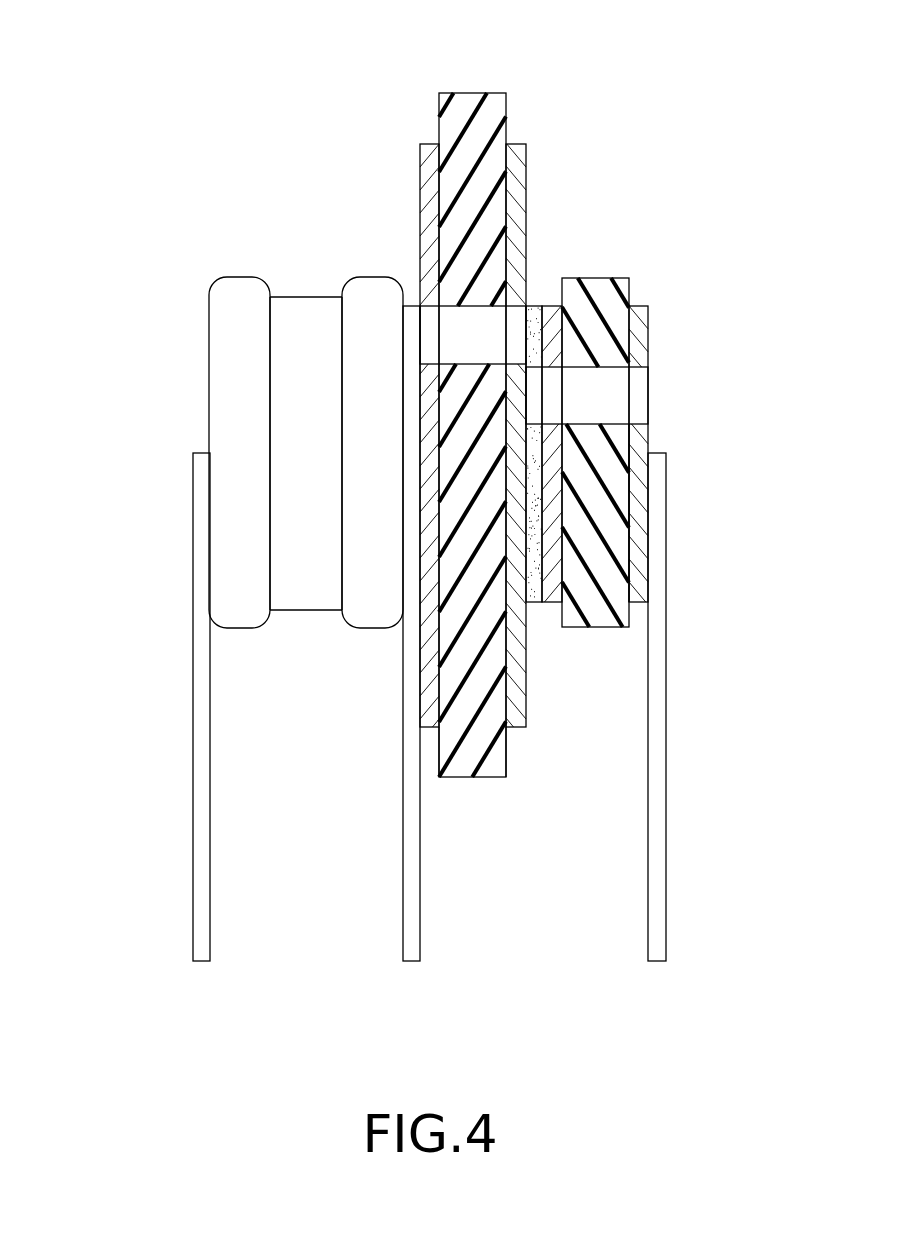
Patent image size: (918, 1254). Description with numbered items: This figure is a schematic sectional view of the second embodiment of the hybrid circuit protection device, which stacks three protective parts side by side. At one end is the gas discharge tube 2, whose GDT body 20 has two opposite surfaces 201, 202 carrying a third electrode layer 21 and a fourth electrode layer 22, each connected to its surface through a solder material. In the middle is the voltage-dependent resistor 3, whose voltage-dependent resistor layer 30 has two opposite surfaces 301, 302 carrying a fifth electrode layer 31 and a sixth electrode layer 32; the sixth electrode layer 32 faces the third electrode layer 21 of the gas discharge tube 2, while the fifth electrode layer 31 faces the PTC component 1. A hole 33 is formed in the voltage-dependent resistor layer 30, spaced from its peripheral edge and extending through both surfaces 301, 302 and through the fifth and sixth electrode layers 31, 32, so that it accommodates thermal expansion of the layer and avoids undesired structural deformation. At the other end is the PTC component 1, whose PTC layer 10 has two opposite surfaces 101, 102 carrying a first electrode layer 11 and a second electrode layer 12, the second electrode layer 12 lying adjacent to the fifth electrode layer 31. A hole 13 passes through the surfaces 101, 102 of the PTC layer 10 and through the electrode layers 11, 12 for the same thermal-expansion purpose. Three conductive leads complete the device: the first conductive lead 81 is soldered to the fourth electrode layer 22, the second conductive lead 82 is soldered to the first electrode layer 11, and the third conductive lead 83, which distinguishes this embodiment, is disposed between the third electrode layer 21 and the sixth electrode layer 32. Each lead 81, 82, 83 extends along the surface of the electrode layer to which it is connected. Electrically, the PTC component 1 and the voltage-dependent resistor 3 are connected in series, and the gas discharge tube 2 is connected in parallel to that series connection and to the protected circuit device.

The PTC component 1 is at (651, 275).
The PTC layer 10 is at (597, 290).
The surface of PTC layer 101 is at (630, 563).
The surface of PTC layer 102 is at (565, 565).
The first electrode layer 11 is at (636, 520).
The second electrode layer 12 is at (552, 572).
The hole 13 is at (605, 400).
The gas discharge tube 2 is at (192, 266).
The GDT body 20 is at (307, 310).
The third electrode layer 21 is at (370, 292).
The fourth electrode layer 22 is at (240, 292).
The surface of GDT body 201 is at (342, 413).
The surface of GDT body 202 is at (270, 376).
The voltage-dependent resistor 3 is at (527, 87).
The voltage-dependent resistor layer 30 is at (465, 110).
The surface of voltage-dependent resistor layer 301 is at (510, 703).
The surface of voltage-dependent resistor layer 302 is at (440, 700).
The fifth electrode layer 31 is at (513, 167).
The sixth electrode layer 32 is at (427, 158).
The hole 33 is at (472, 322).
The first conductive lead 81 is at (203, 935).
The second conductive lead 82 is at (657, 935).
The third conductive lead 83 is at (413, 935).